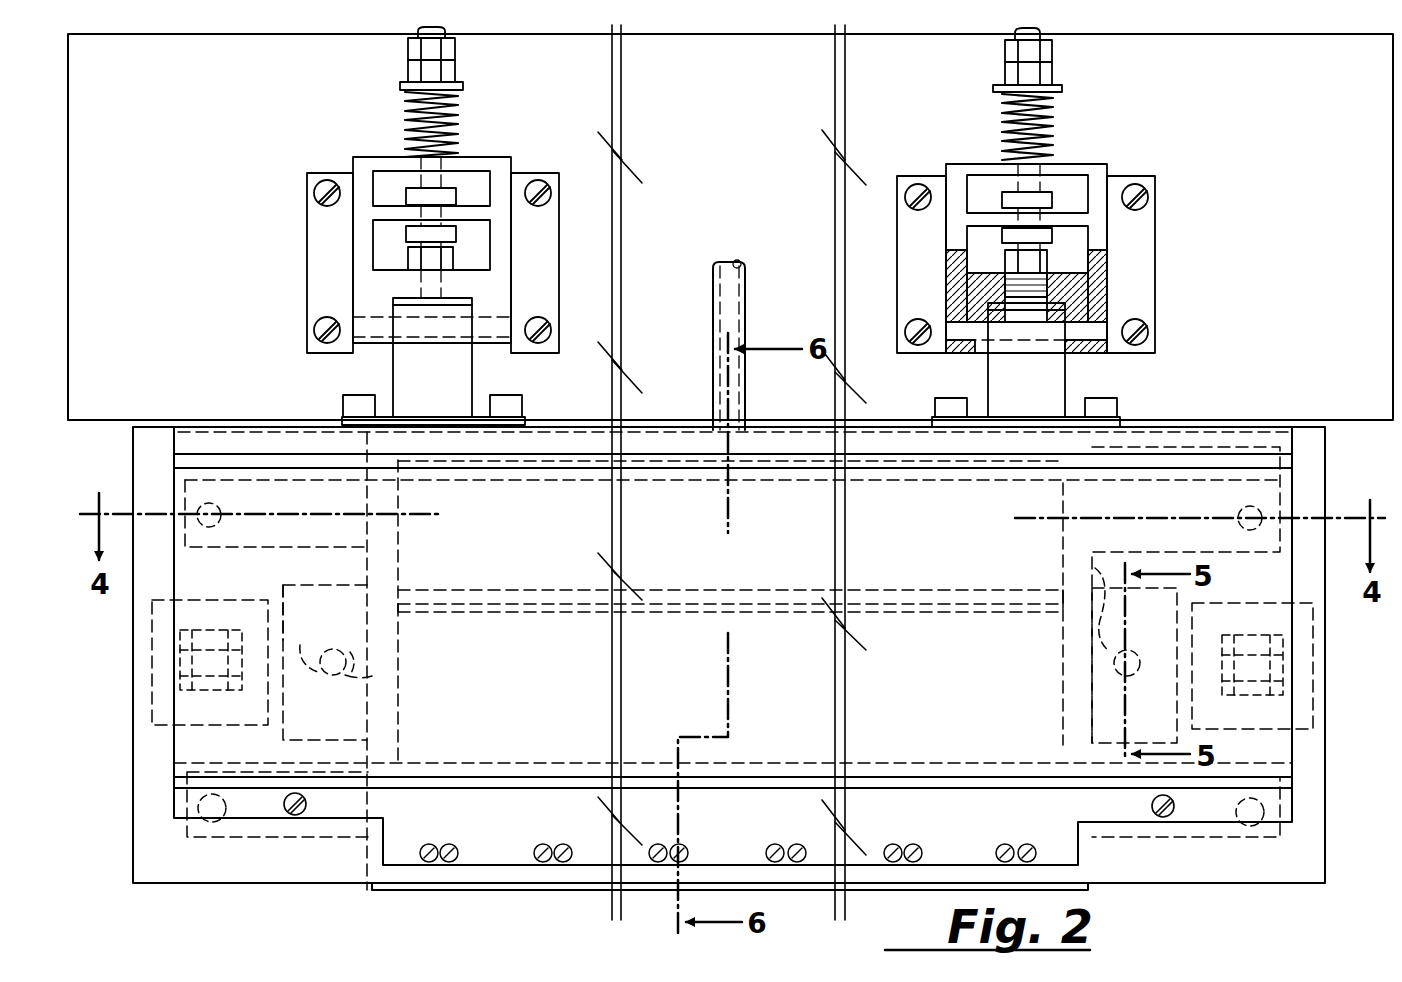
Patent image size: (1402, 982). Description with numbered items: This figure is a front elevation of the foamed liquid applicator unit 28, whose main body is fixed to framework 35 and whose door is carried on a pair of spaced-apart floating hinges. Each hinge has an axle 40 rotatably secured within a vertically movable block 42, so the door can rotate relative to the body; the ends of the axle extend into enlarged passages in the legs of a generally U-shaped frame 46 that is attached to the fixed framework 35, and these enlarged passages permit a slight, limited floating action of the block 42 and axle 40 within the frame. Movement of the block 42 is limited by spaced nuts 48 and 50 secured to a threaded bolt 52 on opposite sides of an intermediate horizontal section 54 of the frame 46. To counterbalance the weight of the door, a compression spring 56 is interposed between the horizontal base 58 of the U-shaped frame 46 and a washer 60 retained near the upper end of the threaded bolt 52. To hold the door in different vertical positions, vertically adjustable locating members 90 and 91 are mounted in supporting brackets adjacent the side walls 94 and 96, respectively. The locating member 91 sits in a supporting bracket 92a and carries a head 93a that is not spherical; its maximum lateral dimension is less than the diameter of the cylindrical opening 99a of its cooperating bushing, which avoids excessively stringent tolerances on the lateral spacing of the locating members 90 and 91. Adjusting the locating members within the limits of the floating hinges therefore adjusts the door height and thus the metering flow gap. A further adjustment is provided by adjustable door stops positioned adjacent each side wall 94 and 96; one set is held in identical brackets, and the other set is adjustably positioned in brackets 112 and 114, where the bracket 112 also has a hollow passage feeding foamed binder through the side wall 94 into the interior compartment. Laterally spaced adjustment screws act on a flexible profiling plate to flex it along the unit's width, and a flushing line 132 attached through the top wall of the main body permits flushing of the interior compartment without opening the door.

The applicator unit 28 is at (1333, 471).
The framework 35 is at (1297, 261).
The axle 40 is at (958, 353).
The vertically movable block 42 is at (975, 288).
The U-shaped frame 46 is at (946, 166).
The nut 48 is at (1005, 200).
The nut 50 is at (1005, 234).
The threaded bolt 52 is at (1030, 192).
The intermediate horizontal section 54 is at (1070, 226).
The compression spring 56 is at (1010, 116).
The horizontal base 58 is at (995, 163).
The washer 60 is at (998, 85).
The locating member 90 is at (1120, 673).
The locating member 91 is at (290, 642).
The supporting bracket 92a is at (283, 588).
The head 93a is at (334, 648).
The side wall 94 is at (1092, 630).
The side wall 96 is at (370, 560).
The cylindrical opening 99a is at (360, 679).
The bracket 112 is at (1100, 536).
The bracket 114 is at (297, 528).
The flushing line 132 is at (728, 289).